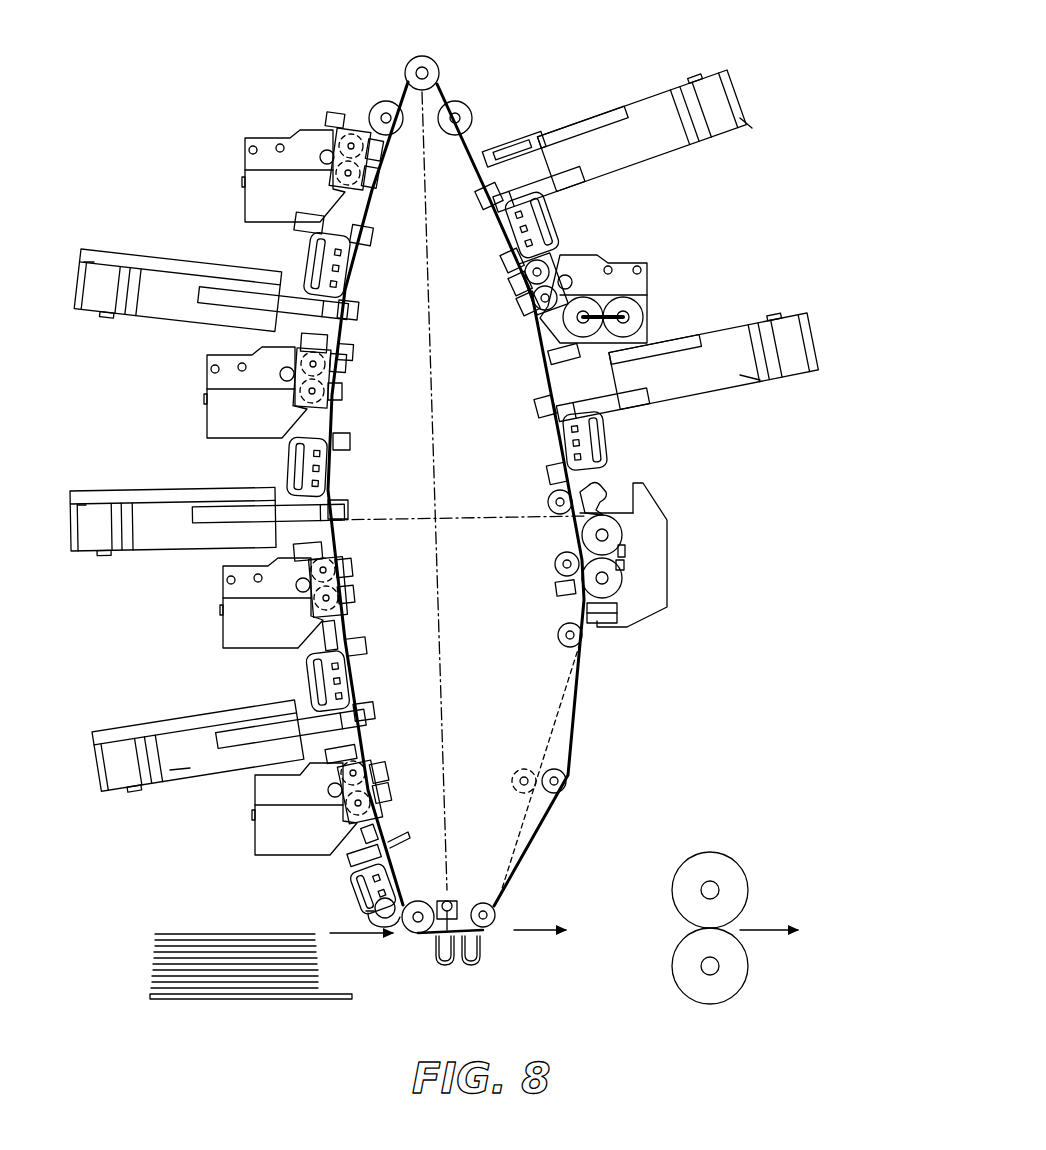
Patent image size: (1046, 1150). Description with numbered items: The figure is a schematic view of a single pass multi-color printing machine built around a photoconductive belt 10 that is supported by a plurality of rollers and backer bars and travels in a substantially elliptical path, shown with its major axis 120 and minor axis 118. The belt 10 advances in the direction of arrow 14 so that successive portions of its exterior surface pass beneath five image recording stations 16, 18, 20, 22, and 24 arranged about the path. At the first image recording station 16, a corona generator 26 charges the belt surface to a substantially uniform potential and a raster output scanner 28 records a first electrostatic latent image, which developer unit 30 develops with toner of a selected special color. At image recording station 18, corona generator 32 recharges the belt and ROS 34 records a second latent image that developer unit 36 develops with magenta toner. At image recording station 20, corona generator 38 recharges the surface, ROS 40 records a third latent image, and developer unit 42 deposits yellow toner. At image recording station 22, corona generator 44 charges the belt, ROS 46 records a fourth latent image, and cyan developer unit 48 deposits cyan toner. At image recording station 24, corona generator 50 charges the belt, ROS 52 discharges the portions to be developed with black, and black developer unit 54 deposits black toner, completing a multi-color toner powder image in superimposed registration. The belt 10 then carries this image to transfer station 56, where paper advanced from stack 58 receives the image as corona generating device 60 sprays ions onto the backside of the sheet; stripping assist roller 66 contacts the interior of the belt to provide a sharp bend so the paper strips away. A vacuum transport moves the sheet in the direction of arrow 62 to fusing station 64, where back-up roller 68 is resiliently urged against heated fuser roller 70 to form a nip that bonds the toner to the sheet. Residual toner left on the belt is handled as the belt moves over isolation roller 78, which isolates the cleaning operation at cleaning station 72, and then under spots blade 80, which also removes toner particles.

The photoconductive belt 10 is at (580, 716).
The arrow 14 is at (370, 575).
The image recording station 16 is at (775, 306).
The image recording station 18 is at (742, 68).
The image recording station 20 is at (154, 244).
The image recording station 22 is at (164, 473).
The image recording station 24 is at (182, 692).
The corona generator 26 is at (607, 440).
The raster output scanner 28 is at (757, 380).
The developer unit 30 is at (648, 290).
The corona generator 32 is at (551, 232).
The ROS 34 is at (738, 122).
The developer unit 36 is at (273, 143).
The corona generator 38 is at (312, 241).
The ROS 40 is at (91, 312).
The developer unit 42 is at (206, 379).
The corona generator 44 is at (288, 466).
The ROS 46 is at (87, 549).
The cyan developer unit 48 is at (224, 592).
The corona generator 50 is at (311, 668).
The ROS 52 is at (181, 778).
The black developer unit 54 is at (284, 855).
The transfer station 56 is at (440, 972).
The stack 58 is at (262, 985).
The corona generating device 60 is at (469, 976).
The arrow 62 is at (545, 932).
The fusing station 64 is at (725, 902).
The stripping assist roller 66 is at (483, 905).
The back-up roller 68 is at (738, 978).
The heated fuser roller 70 is at (736, 872).
The cleaning station 72 is at (683, 512).
The isolation roller 78 is at (558, 641).
The spots blade 80 is at (598, 482).
The minor axis 118 is at (498, 515).
The major axis 120 is at (432, 287).